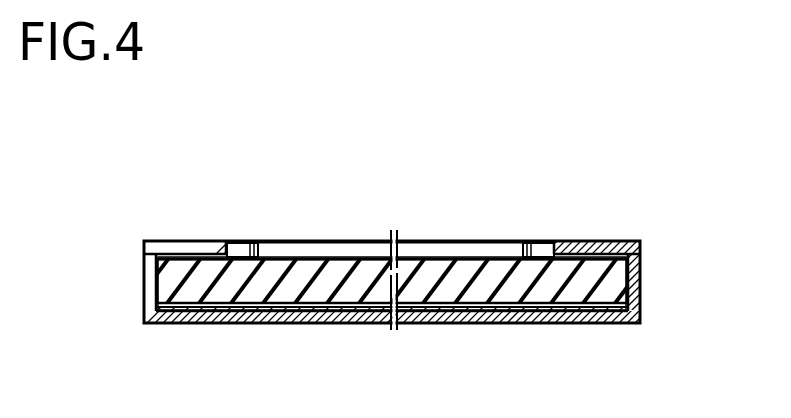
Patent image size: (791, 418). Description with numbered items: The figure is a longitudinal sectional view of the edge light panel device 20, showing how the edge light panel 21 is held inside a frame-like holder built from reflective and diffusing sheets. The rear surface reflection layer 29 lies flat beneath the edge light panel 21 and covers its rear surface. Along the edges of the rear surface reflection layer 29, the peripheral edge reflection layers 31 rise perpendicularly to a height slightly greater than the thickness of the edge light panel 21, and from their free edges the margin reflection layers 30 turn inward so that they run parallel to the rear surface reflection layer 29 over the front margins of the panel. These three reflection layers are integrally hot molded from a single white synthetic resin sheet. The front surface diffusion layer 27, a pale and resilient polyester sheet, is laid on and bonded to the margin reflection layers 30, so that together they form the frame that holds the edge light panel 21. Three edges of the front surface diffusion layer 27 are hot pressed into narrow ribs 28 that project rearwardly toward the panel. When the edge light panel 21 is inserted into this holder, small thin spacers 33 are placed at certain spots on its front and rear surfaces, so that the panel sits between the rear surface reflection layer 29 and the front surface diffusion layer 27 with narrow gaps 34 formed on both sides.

The edge light panel device 20 is at (645, 333).
The edge light panel 21 is at (545, 296).
The front surface diffusion layer 27 is at (432, 243).
The narrow ribs 28 is at (252, 244).
The rear surface reflection layer 29 is at (432, 305).
The margin reflection layers 30 is at (228, 241).
The peripheral edge reflection layers 31 is at (622, 280).
The spacers 33 is at (640, 247).
The narrow gaps 34 is at (344, 244).